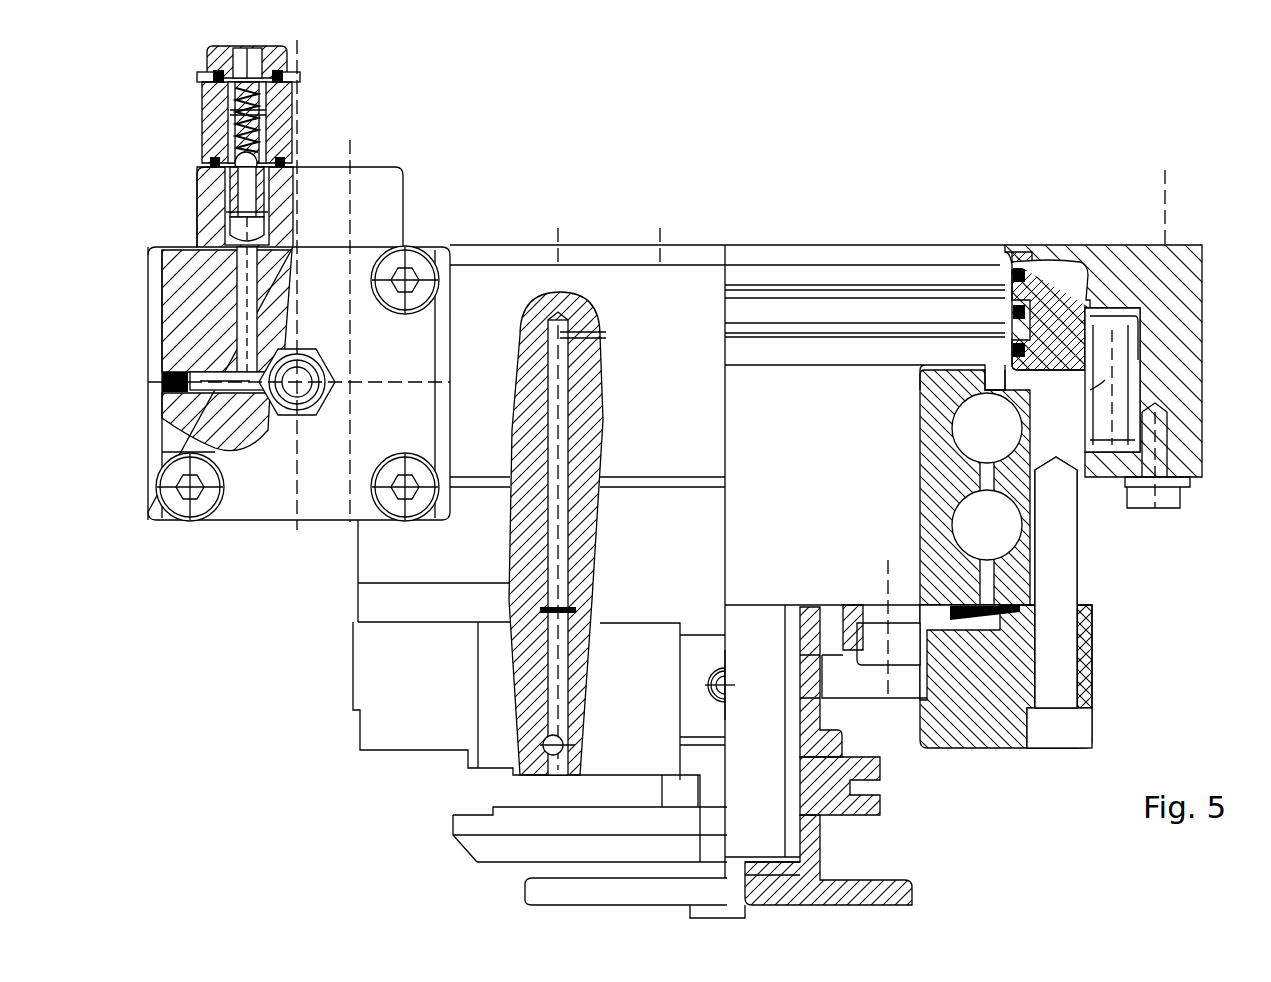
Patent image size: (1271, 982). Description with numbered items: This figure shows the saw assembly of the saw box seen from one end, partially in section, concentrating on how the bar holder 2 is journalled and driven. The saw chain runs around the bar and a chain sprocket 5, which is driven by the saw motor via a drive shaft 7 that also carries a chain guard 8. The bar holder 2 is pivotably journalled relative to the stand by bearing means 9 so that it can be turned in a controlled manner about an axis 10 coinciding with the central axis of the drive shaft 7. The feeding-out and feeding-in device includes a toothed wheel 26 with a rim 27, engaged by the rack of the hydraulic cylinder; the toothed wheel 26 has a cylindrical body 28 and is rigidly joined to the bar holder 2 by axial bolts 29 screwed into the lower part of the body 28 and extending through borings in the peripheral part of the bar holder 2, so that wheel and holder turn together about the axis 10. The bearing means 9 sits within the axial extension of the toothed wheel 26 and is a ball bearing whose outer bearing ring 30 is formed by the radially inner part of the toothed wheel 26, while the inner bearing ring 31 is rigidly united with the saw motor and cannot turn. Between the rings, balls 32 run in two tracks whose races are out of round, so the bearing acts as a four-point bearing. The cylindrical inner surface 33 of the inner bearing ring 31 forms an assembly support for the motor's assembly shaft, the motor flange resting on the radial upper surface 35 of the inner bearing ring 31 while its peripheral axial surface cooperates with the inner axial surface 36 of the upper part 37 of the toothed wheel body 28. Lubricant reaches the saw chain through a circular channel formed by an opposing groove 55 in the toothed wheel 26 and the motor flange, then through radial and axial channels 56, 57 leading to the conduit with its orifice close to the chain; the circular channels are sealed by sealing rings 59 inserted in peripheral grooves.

The bar holder 2 is at (988, 750).
The chain sprocket 5 is at (868, 812).
The drive shaft 7 is at (768, 712).
The chain guard 8 is at (915, 890).
The bearing means 9 is at (941, 487).
The axis of pivot 10 is at (730, 275).
The toothed wheel 26 is at (1100, 338).
The rim 27 is at (1128, 355).
The cylindrical body 28 is at (1080, 395).
The axial bolts 29 is at (1080, 752).
The outer bearing ring 30 is at (1030, 560).
The inner bearing ring 31 is at (936, 440).
The balls 32 is at (952, 530).
The inner surface 33 is at (920, 553).
The radial upper surface 35 is at (960, 365).
The inner axial surface 36 is at (1003, 255).
The upper part 37 is at (1087, 285).
The groove 55 is at (790, 340).
The radial channel 56 is at (592, 348).
The axial channel 57 is at (565, 423).
The sealing rings 59 is at (1010, 275).